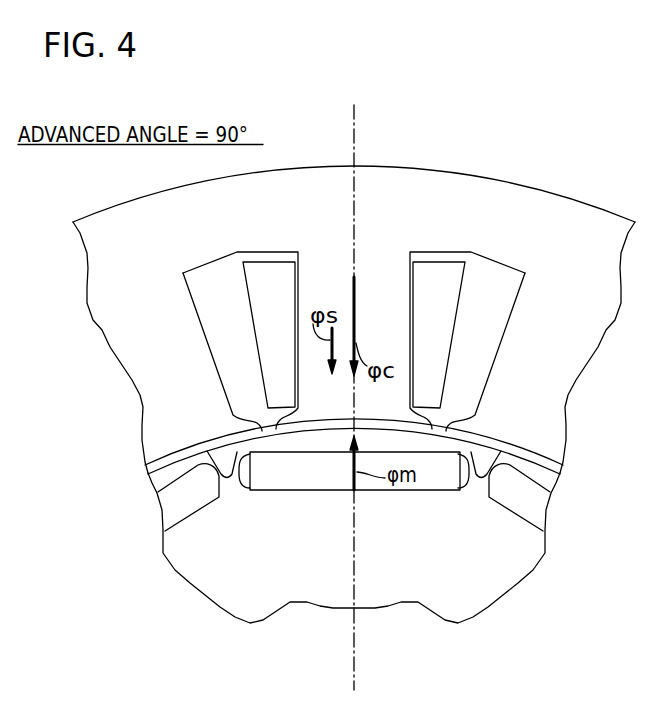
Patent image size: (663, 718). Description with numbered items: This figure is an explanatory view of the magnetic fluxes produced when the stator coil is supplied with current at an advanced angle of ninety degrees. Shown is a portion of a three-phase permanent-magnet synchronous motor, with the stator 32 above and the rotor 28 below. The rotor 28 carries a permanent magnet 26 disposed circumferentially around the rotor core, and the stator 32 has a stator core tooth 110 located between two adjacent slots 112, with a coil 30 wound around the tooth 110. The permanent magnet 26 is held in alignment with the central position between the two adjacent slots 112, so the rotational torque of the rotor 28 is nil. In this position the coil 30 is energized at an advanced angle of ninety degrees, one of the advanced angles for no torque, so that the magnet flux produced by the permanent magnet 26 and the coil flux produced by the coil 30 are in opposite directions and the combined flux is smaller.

The permanent magnet 26 is at (263, 482).
The rotor 28 is at (488, 560).
The coil 30 is at (260, 297).
The stator 32 is at (452, 170).
The stator core tooth 110 is at (373, 298).
The slot 112 is at (215, 337).